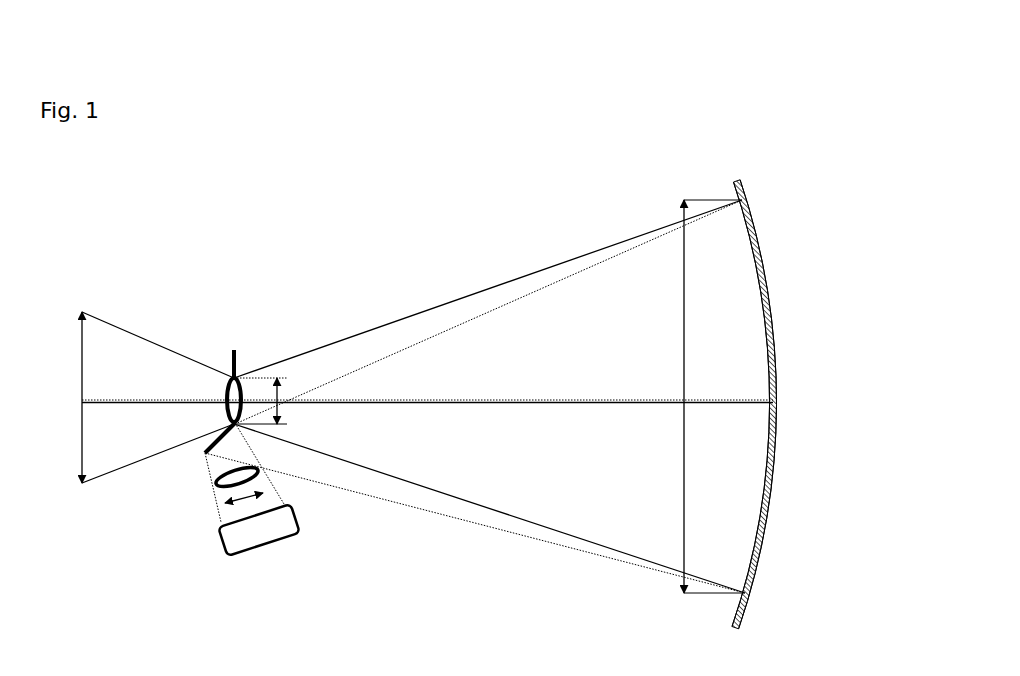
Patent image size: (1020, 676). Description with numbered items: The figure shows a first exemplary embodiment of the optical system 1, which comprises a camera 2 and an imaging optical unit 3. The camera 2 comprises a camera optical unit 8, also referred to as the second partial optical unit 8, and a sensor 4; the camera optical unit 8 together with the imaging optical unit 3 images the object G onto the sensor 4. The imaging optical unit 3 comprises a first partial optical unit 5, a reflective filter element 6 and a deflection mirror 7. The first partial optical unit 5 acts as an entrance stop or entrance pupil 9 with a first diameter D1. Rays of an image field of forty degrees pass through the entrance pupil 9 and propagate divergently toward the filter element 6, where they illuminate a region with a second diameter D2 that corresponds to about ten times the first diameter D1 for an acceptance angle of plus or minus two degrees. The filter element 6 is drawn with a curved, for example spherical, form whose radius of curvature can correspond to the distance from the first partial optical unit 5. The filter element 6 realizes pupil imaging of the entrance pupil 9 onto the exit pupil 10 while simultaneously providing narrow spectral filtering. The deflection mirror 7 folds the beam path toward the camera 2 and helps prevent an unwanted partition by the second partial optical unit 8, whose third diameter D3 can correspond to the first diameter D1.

The optical system 1 is at (762, 598).
The camera 2 is at (252, 557).
The imaging optical unit 3 is at (762, 208).
The sensor 4 is at (287, 542).
The first partial optical unit 5 is at (224, 380).
The reflective filter element 6 is at (758, 563).
The deflection mirror 7 is at (207, 445).
The camera optical unit 8 is at (257, 458).
The entrance pupil 9 is at (227, 397).
The exit pupil 10 is at (213, 473).
The object G is at (82, 338).
The first diameter D1 is at (290, 400).
The second diameter D2 is at (685, 383).
The third diameter D3 is at (215, 505).